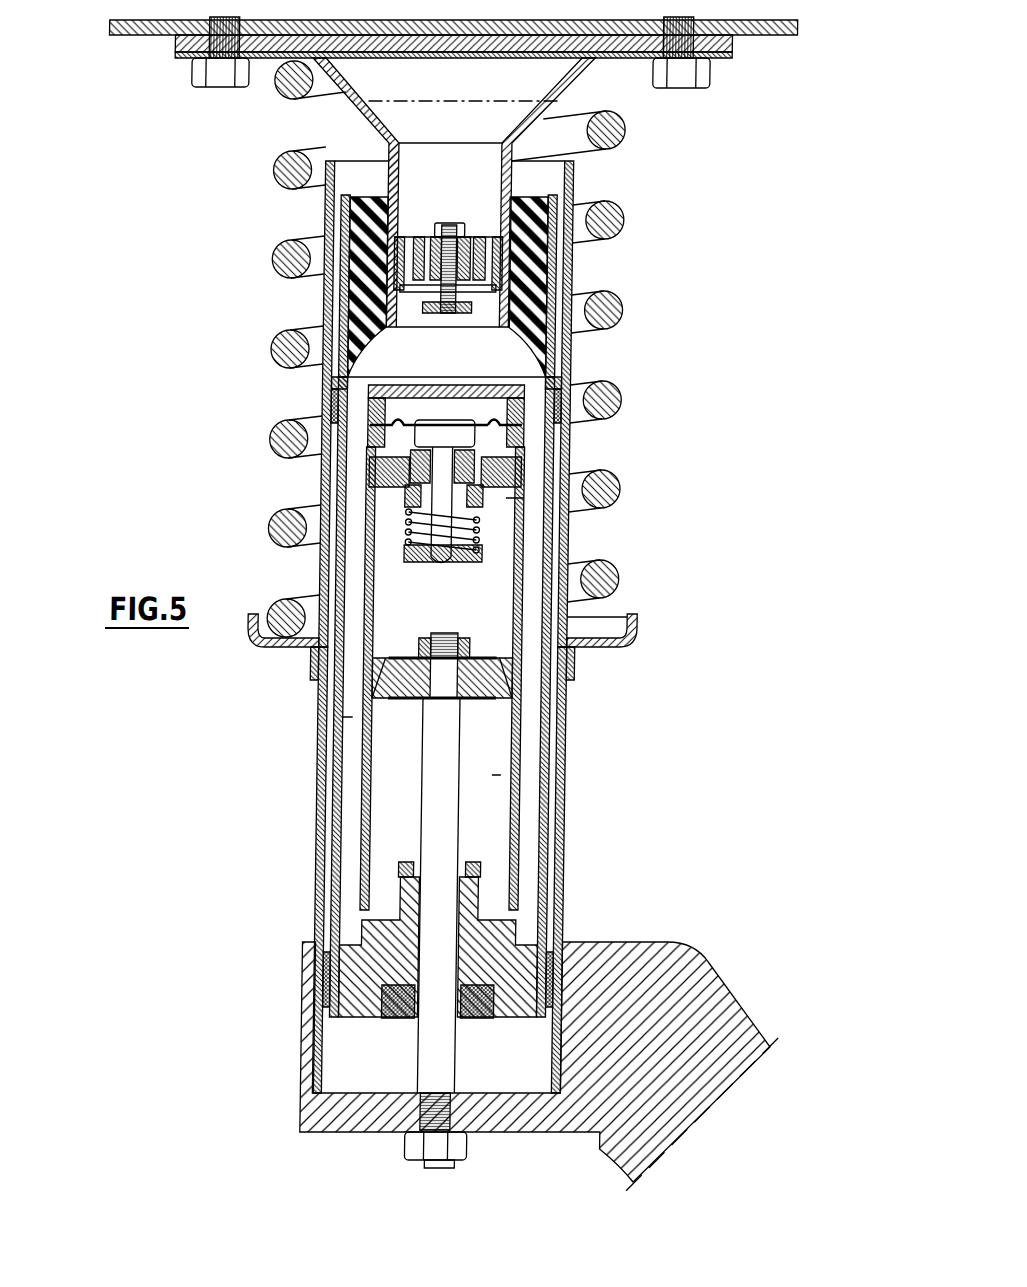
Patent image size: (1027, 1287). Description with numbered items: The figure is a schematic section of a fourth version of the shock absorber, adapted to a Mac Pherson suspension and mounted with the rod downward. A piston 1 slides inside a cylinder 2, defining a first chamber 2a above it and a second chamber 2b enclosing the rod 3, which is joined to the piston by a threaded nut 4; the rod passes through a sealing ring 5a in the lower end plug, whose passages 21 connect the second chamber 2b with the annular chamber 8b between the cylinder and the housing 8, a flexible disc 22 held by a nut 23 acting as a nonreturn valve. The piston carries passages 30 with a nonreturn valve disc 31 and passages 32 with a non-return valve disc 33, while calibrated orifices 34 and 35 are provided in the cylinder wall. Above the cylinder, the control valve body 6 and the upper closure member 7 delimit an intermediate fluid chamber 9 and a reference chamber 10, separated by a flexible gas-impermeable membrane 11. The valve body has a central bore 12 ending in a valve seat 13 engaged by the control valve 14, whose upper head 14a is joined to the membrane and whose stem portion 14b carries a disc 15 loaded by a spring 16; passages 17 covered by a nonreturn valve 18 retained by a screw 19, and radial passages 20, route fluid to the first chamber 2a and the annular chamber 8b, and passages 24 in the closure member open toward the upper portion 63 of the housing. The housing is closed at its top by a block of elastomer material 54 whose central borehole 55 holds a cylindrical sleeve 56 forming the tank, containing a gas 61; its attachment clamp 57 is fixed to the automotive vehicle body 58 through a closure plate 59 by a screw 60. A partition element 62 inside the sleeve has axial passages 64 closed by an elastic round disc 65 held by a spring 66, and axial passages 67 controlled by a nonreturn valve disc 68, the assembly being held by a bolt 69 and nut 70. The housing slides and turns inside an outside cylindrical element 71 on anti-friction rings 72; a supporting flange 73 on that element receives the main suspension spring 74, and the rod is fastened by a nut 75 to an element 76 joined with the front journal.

The piston 1 is at (487, 680).
The cylinder 2 is at (557, 605).
The first chamber 2a is at (639, 637).
The second chamber 2b is at (503, 775).
The rod 3 is at (446, 780).
The threaded nut 4 is at (431, 638).
The sealing ring 5a is at (412, 1018).
The control valve body 6 is at (485, 475).
The upper closure member 7 is at (565, 383).
The housing 8 is at (344, 795).
The annular chamber 8b is at (363, 717).
The intermediate fluid chamber 9 is at (528, 390).
The reference chamber 10 is at (378, 415).
The flexible gas-impermeable membrane 11 is at (494, 410).
The central bore 12 is at (555, 498).
The valve seat 13 is at (387, 458).
The control valve 14 is at (453, 420).
The upper head 14a is at (433, 420).
The stem portion 14b is at (453, 562).
The disc 15 is at (438, 558).
The spring 16 is at (608, 575).
The passages 17 is at (409, 490).
The nonreturn valve 18 is at (412, 505).
The screw 19 is at (418, 547).
The radial passages 20 is at (506, 428).
The passages 21 is at (390, 912).
The flexible disc 22 is at (412, 872).
The nut 23 is at (482, 865).
The passages 24 is at (335, 385).
The passages 30 is at (392, 687).
The nonreturn valve disc 31 is at (411, 655).
The passages 32 is at (530, 671).
The non-return valve disc 33 is at (485, 700).
The calibrated orifice 34 is at (486, 537).
The calibrated orifice 35 is at (525, 848).
The block of elastomer material 54 is at (333, 235).
The central borehole 55 is at (363, 215).
The cylindrical sleeve 56 is at (516, 178).
The attachment clamp 57 is at (276, 58).
The automotive vehicle body 58 is at (140, 27).
The closure plate 59 is at (423, 43).
The screw 60 is at (225, 72).
The gas 61 is at (518, 77).
The partition element 62 is at (425, 228).
The upper portion 63 is at (508, 357).
The axial passages 64 is at (491, 262).
The elastic round disc 65 is at (553, 323).
The spring 66 is at (384, 298).
The axial passages 67 is at (397, 265).
The nonreturn valve disc 68 is at (523, 215).
The bolt 69 is at (468, 215).
The nut 70 is at (432, 313).
The outside cylindrical element 71 is at (333, 800).
The anti-friction rings 72 is at (339, 400).
The supporting flange 73 is at (267, 642).
The main suspension spring 74 is at (295, 345).
The nut 75 is at (431, 1145).
The element 76 is at (647, 1007).